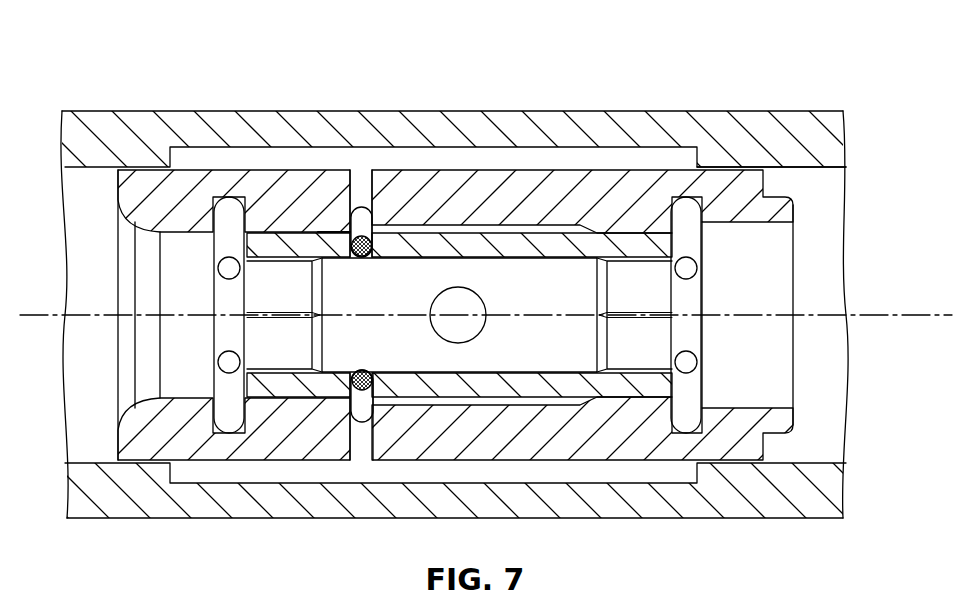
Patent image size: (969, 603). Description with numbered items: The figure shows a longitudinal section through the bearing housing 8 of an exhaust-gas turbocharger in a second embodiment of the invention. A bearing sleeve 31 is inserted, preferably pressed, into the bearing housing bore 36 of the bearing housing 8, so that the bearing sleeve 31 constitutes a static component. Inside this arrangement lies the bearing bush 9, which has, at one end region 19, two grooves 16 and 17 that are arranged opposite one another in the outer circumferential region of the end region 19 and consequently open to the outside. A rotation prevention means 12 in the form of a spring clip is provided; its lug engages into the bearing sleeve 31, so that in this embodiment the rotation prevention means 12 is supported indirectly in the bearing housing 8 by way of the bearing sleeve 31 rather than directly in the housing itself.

The bearing housing 8 is at (671, 114).
The bearing bush 9 is at (540, 243).
The rotation prevention means 12 is at (362, 199).
The groove 16 is at (367, 257).
The groove 17 is at (358, 362).
The end region 19 is at (325, 221).
The bearing sleeve 31 is at (445, 177).
The bearing housing bore 36 is at (817, 167).